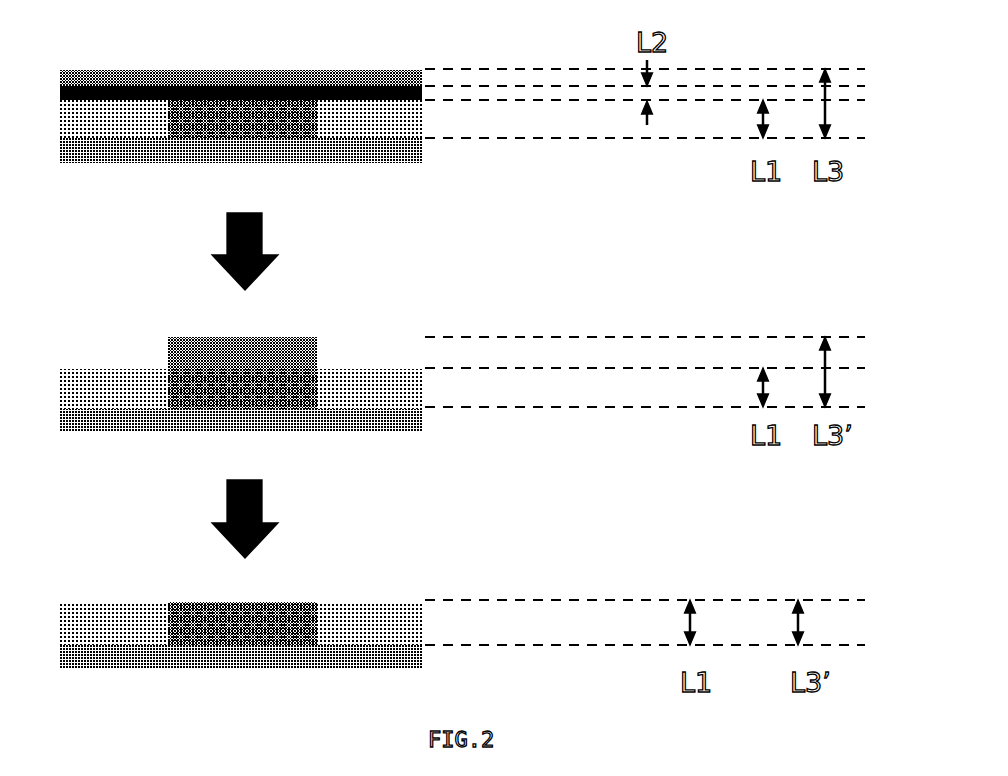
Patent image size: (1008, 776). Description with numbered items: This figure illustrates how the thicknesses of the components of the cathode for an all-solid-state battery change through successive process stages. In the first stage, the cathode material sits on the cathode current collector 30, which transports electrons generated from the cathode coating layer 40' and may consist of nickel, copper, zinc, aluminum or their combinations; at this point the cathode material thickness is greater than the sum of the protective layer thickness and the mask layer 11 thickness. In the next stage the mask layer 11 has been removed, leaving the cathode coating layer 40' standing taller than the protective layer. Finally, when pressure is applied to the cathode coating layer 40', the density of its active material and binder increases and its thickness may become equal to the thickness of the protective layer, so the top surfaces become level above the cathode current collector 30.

The cathode coating layer 40' is at (246, 55).
The mask layer 11 is at (400, 126).
The cathode current collector 30 is at (400, 151).